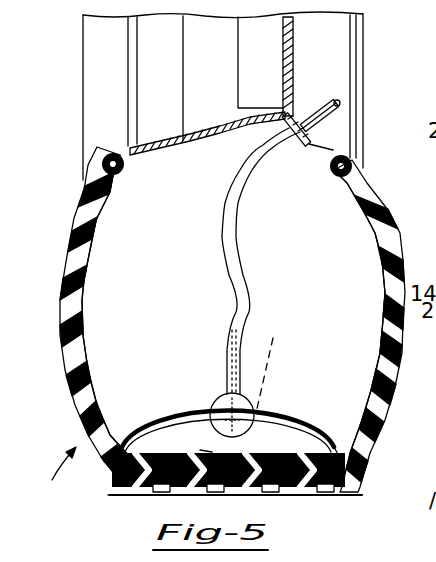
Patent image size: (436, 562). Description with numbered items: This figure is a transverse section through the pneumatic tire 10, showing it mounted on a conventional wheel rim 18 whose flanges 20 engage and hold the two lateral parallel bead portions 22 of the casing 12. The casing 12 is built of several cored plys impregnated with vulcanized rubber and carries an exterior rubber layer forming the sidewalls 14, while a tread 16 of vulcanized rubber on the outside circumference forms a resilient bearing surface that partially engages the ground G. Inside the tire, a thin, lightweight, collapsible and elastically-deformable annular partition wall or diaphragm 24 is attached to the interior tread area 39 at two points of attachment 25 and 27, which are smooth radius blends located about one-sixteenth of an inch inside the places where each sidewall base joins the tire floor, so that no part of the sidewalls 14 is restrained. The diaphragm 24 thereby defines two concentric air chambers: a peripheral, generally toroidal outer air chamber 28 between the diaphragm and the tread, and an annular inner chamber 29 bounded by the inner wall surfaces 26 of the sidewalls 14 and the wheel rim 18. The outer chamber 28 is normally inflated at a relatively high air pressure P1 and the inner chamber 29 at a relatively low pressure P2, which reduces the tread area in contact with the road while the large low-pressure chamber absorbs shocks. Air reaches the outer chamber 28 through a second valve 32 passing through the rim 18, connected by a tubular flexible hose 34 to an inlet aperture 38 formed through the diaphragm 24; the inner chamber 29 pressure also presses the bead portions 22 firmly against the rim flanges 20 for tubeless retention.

The pneumatic tire 10 is at (53, 476).
The casing 12 is at (90, 241).
The sidewalls 14 is at (222, 319).
The tread 16 is at (113, 482).
The wheel rim 18 is at (192, 148).
The flanges 20 is at (103, 152).
The bead portions 22 is at (121, 172).
The diaphragm 24 is at (257, 408).
The point of attachment 25 is at (123, 447).
The inner wall surfaces 26 is at (81, 325).
The point of attachment 27 is at (143, 450).
The outer air chamber 28 is at (302, 425).
The inner chamber 29 is at (212, 342).
The second valve 32 is at (308, 107).
The tubular flexible hose 34 is at (226, 278).
The inlet aperture 38 is at (274, 363).
The interior tread area 39 is at (202, 451).
The ground G is at (354, 493).
The high air pressure P1 is at (273, 437).
The low pressure P2 is at (305, 271).